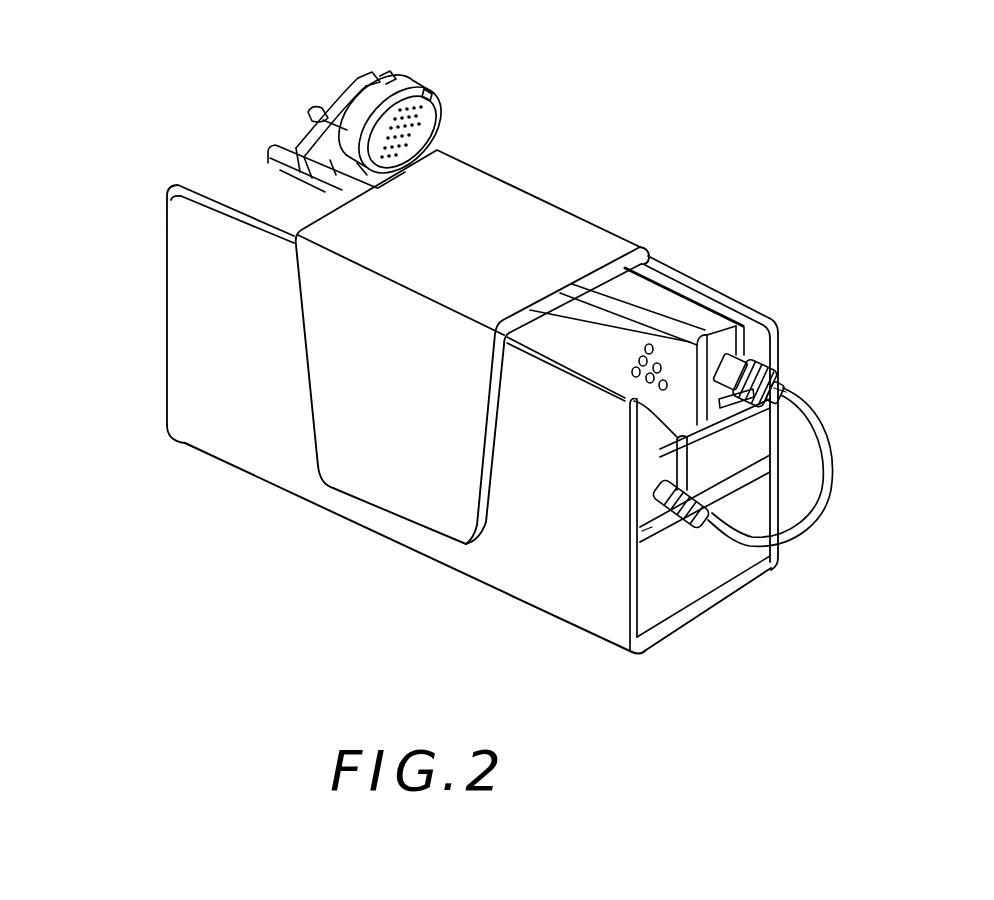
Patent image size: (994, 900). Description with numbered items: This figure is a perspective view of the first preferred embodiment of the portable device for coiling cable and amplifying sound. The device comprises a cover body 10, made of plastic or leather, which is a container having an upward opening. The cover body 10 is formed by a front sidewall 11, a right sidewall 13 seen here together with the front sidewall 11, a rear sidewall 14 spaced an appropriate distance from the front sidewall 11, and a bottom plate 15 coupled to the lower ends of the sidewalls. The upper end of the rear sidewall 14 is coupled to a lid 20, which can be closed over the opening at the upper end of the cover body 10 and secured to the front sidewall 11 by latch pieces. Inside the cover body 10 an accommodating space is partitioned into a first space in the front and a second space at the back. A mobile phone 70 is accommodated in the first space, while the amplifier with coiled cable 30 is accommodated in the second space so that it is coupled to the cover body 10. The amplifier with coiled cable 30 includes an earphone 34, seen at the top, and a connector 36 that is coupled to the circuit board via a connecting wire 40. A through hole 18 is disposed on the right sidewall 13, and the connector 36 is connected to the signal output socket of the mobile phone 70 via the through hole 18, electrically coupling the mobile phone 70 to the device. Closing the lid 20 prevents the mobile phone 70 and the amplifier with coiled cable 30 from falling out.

The cover body 10 is at (150, 308).
The front sidewall 11 is at (242, 403).
The right sidewall 13 is at (667, 578).
The rear sidewall 14 is at (778, 444).
The bottom plate 15 is at (656, 630).
The through hole 18 is at (778, 396).
The lid 20 is at (527, 231).
The amplifier with coiled cable 30 is at (722, 282).
The earphone 34 is at (428, 105).
The connector 36 is at (680, 487).
The connecting wire 40 is at (822, 474).
The mobile phone 70 is at (238, 203).